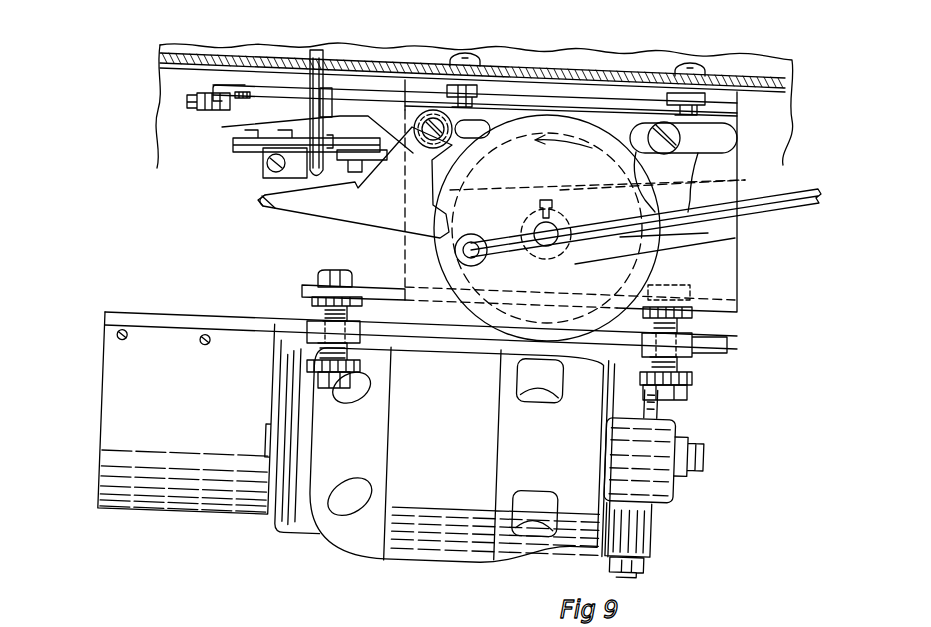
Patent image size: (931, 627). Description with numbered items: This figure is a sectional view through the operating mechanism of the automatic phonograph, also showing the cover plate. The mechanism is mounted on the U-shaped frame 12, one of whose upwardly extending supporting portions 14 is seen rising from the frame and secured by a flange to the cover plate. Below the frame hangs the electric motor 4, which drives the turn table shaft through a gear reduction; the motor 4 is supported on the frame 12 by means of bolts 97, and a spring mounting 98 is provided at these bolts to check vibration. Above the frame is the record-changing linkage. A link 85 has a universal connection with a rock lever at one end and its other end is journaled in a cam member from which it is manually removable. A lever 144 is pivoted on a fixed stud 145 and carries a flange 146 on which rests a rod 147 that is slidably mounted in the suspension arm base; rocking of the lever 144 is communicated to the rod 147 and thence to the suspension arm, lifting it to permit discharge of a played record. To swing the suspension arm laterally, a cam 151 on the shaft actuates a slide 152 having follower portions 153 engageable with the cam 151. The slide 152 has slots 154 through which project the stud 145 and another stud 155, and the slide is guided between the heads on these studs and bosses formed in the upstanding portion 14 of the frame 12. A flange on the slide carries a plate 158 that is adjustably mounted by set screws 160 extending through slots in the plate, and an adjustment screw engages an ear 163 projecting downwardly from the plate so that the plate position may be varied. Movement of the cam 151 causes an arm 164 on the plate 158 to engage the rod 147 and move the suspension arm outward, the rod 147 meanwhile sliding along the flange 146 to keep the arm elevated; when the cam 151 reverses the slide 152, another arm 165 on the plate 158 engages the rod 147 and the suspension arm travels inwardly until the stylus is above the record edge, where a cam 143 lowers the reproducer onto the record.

The electric motor 4 is at (430, 540).
The frame 12 is at (357, 290).
The upwardly extending supporting portion 14 is at (718, 276).
The link 85 is at (782, 200).
The bolts 97 is at (323, 278).
The spring mounting 98 is at (323, 313).
The cam 143 is at (710, 236).
The lever 144 is at (360, 212).
The fixed stud 145 is at (433, 117).
The flange 146 is at (273, 202).
The rod 147 is at (323, 55).
The cam 151 is at (585, 113).
The slide 152 is at (617, 123).
The follower portions 153 is at (735, 180).
The slots 154 is at (467, 130).
The stud 155 is at (680, 133).
The plate 158 is at (273, 92).
The set screws 160 is at (255, 103).
The ear 163 is at (228, 120).
The arm 164 is at (340, 97).
The arm 165 is at (245, 90).